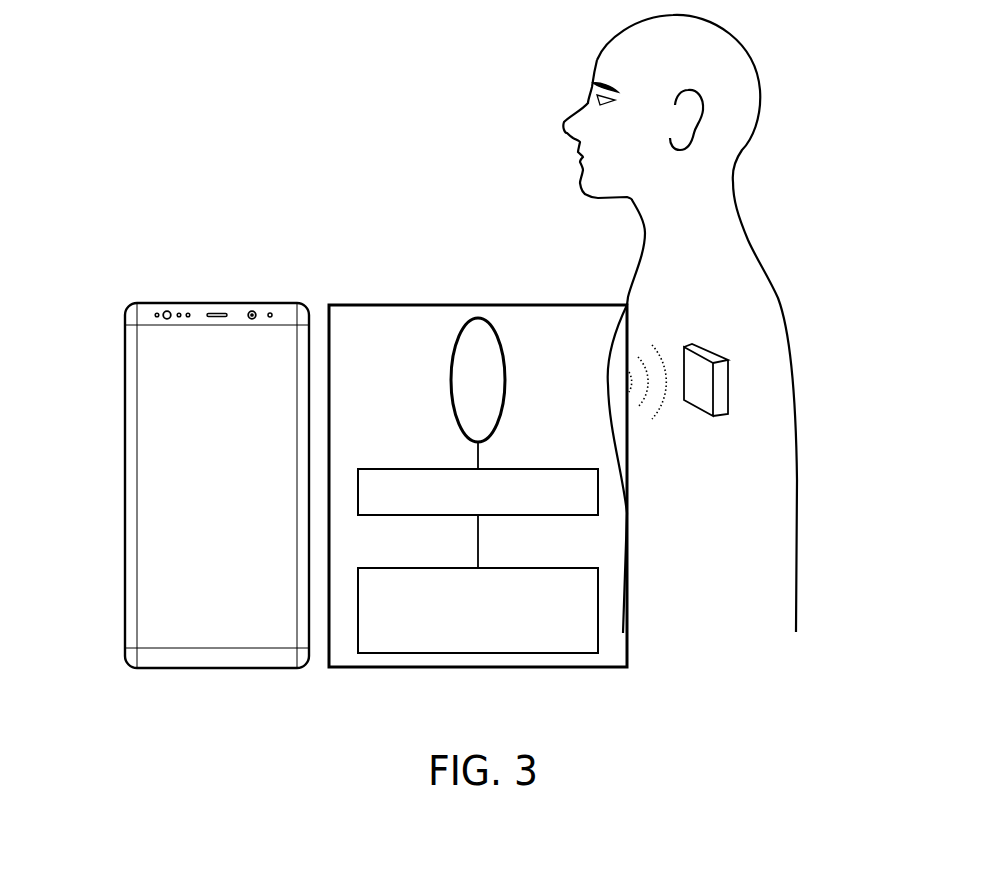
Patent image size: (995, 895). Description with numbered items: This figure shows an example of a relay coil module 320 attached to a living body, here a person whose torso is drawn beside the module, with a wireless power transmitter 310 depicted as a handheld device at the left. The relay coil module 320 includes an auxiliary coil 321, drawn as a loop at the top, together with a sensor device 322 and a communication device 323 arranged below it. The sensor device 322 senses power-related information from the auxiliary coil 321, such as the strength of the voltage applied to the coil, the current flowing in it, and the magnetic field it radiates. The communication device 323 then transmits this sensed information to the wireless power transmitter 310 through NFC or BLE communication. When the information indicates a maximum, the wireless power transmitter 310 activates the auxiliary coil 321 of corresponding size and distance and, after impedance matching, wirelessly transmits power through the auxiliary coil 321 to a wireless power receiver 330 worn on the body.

The wireless power transmitter 310 is at (125, 482).
The relay coil module 320 is at (478, 449).
The auxiliary coil 321 is at (452, 353).
The sensor device 322 is at (522, 469).
The communication device 323 is at (522, 568).
The wireless power receiver 330 is at (713, 355).